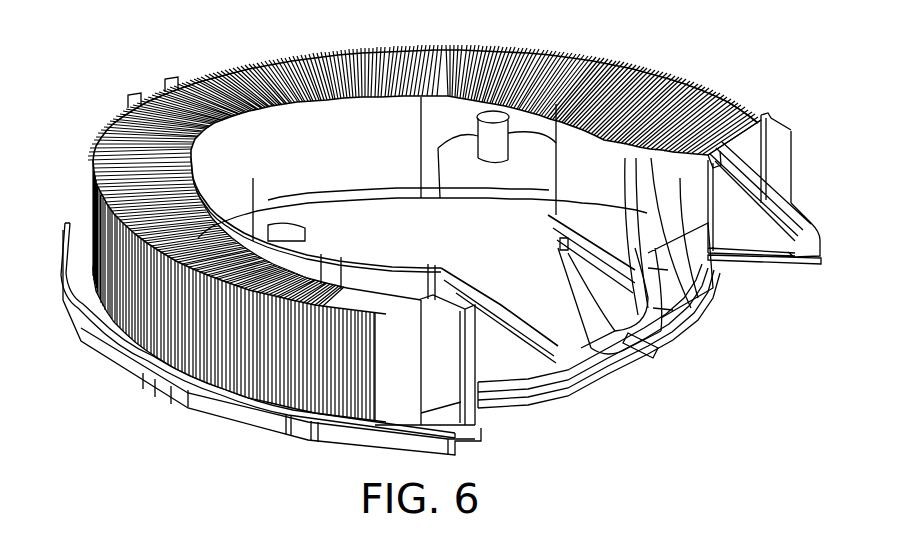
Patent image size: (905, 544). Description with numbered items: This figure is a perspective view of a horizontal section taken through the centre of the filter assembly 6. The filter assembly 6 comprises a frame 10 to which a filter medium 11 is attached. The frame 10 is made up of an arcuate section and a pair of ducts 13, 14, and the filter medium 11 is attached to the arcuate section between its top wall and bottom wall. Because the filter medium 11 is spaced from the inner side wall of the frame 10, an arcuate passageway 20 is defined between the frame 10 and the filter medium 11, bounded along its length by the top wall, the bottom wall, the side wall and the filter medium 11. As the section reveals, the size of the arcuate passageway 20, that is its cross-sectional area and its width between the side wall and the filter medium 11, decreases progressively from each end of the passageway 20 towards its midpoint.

The filter assembly 6 is at (87, 77).
The frame 10 is at (150, 383).
The filter medium 11 is at (113, 310).
The duct 13 is at (497, 358).
The duct 14 is at (653, 283).
The arcuate passageway 20 is at (372, 268).